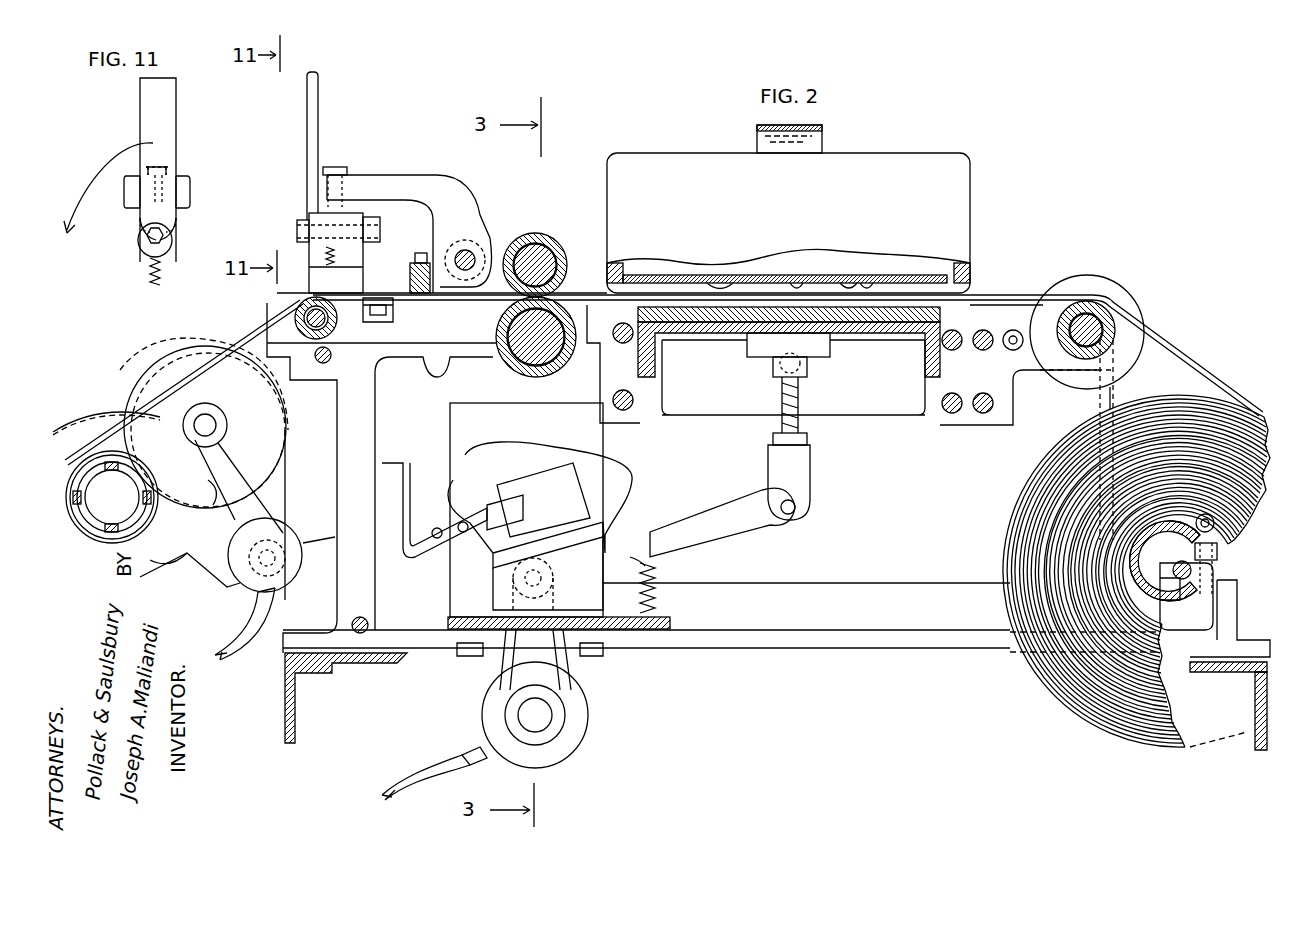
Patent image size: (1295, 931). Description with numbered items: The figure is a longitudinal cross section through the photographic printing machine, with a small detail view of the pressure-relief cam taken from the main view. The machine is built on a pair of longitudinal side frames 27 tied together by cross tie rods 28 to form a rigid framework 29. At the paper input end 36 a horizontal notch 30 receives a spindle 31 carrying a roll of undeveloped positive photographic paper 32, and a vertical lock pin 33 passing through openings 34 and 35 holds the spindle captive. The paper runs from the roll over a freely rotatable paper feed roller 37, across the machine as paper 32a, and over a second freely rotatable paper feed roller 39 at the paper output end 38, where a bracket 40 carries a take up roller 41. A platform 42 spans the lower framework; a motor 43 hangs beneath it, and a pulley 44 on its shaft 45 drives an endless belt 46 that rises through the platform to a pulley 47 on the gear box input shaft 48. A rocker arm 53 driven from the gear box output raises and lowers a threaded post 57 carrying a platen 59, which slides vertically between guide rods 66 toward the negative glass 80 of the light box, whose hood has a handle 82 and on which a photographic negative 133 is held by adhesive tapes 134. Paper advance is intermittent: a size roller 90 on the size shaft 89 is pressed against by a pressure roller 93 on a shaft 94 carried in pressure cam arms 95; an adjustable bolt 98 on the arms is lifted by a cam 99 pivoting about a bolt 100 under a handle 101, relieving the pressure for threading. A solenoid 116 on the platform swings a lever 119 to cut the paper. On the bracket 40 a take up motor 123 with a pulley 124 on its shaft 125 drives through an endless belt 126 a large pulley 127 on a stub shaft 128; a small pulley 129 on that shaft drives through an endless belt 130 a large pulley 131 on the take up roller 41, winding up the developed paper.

In FIG. 2, the longitudinal side frames 27 is at (1115, 398).
In FIG. 2, the cross tie rods 28 is at (331, 355).
In FIG. 2, the framework assembly 29 is at (856, 660).
In FIG. 2, the horizontal notch 30 is at (1172, 596).
In FIG. 2, the spindle 31 is at (1192, 572).
In FIG. 2, the roll of undeveloped positive photographic paper 32 is at (1105, 720).
In FIG. 2, the positive paper between the rollers 32a is at (1015, 298).
In FIG. 2, the vertical lock pin 33 is at (1214, 524).
In FIG. 2, the opening 34 is at (1217, 551).
In FIG. 2, the opening 35 is at (1222, 605).
In FIG. 2, the paper input end 36 is at (1030, 709).
In FIG. 2, the paper feed roller 37 is at (1115, 330).
In FIG. 2, the paper output end 38 is at (360, 693).
In FIG. 2, the paper feed roller 39 is at (295, 312).
In FIG. 2, the bracket 40 is at (193, 572).
In FIG. 2, the take up roller 41 is at (110, 470).
In FIG. 2, the platform 42 is at (670, 620).
In FIG. 2, the motor 43 is at (585, 715).
In FIG. 2, the pulley 44 is at (560, 745).
In FIG. 2, the motor shaft 45 is at (540, 713).
In FIG. 2, the endless belt 46 is at (565, 665).
In FIG. 2, the pulley 47 is at (548, 567).
In FIG. 2, the input shaft 48 is at (542, 578).
In FIG. 2, the rocker arm 53 is at (745, 532).
In FIG. 2, the post 57 is at (800, 412).
In FIG. 2, the platen 59 is at (724, 373).
In FIG. 2, the guide rods 66 is at (618, 343).
In FIG. 2, the negative glass 80 is at (685, 268).
In FIG. 2, the handle 82 is at (822, 135).
In FIG. 2, the size shaft 89 is at (520, 335).
In FIG. 2, the size roller 90 is at (520, 368).
In FIG. 2, the pressure roller 93 is at (555, 257).
In FIG. 2, the shaft 94 is at (565, 240).
In FIG. 11, the pressure cam arms 95 is at (190, 186).
In FIG. 2, the pressure cam arms 95 is at (413, 244).
In FIG. 11, the adjustable bolt 98 is at (160, 170).
In FIG. 11, the cam 99 is at (178, 222).
In FIG. 11, the bolt 100 is at (138, 243).
In FIG. 2, the bolt 100 is at (297, 230).
In FIG. 11, the handle 101 is at (170, 112).
In FIG. 2, the handle 101 is at (307, 118).
In FIG. 2, the solenoid 116 is at (556, 515).
In FIG. 2, the lever 119 is at (438, 470).
In FIG. 2, the take up motor 123 is at (280, 595).
In FIG. 2, the pulley 124 is at (287, 520).
In FIG. 2, the motor shaft 125 is at (260, 578).
In FIG. 2, the endless belt 126 is at (290, 470).
In FIG. 2, the large pulley 127 is at (163, 355).
In FIG. 2, the stub shaft 128 is at (210, 417).
In FIG. 2, the small pulley 129 is at (213, 465).
In FIG. 2, the endless belt 130 is at (222, 495).
In FIG. 2, the large pulley 131 is at (105, 410).
In FIG. 2, the photographic negative 133 is at (810, 275).
In FIG. 2, the adhesive tapes 134 is at (870, 283).